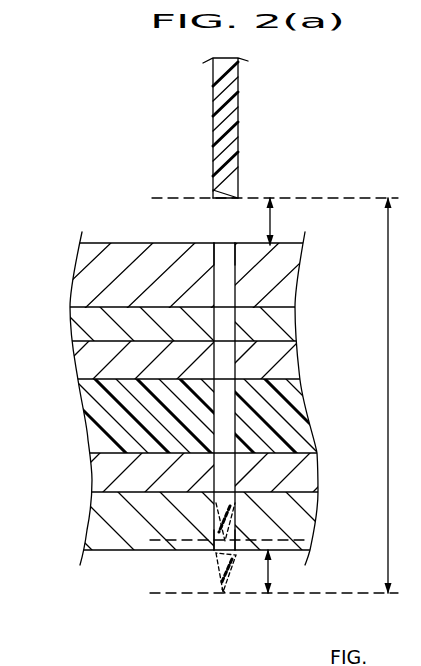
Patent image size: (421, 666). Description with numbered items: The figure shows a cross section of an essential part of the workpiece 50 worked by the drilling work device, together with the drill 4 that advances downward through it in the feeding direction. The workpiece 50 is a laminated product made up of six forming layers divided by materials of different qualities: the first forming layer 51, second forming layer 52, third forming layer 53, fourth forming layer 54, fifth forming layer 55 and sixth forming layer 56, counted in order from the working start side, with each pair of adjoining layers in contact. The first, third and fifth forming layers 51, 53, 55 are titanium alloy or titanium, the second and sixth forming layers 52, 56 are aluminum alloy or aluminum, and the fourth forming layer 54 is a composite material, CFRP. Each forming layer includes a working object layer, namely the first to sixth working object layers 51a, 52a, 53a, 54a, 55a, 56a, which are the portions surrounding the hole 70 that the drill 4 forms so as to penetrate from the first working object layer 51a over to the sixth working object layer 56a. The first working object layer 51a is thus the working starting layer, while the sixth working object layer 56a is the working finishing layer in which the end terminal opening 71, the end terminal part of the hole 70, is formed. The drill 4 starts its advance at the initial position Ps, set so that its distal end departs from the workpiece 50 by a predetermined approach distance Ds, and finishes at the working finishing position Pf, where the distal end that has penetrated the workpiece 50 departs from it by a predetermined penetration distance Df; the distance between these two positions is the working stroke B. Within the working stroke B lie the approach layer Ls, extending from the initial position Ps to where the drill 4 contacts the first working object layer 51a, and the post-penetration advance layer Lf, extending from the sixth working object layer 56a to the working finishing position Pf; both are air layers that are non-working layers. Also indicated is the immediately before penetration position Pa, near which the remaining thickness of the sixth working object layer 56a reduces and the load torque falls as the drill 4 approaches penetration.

The drill 4 is at (228, 96).
The workpiece 50 is at (112, 222).
The first forming layer 51 is at (95, 277).
The second forming layer 52 is at (95, 324).
The third forming layer 53 is at (95, 359).
The fourth forming layer 54 is at (95, 410).
The fifth forming layer 55 is at (92, 470).
The sixth forming layer 56 is at (92, 517).
The first working object layer 51a is at (245, 278).
The second working object layer 52a is at (245, 329).
The third working object layer 53a is at (245, 364).
The fourth working object layer 54a is at (243, 417).
The fifth working object layer 55a is at (247, 476).
The sixth working object layer 56a is at (243, 523).
The hole 70 is at (222, 245).
The end terminal opening 71 is at (214, 552).
The initial position Ps is at (170, 196).
The approach layer Ls is at (233, 220).
The approach distance Ds is at (286, 221).
The working stroke B is at (397, 395).
The immediately before penetration position Pa is at (313, 542).
The working finishing position Pf is at (170, 598).
The post-penetration advance layer Lf is at (212, 577).
The penetration distance Df is at (284, 571).